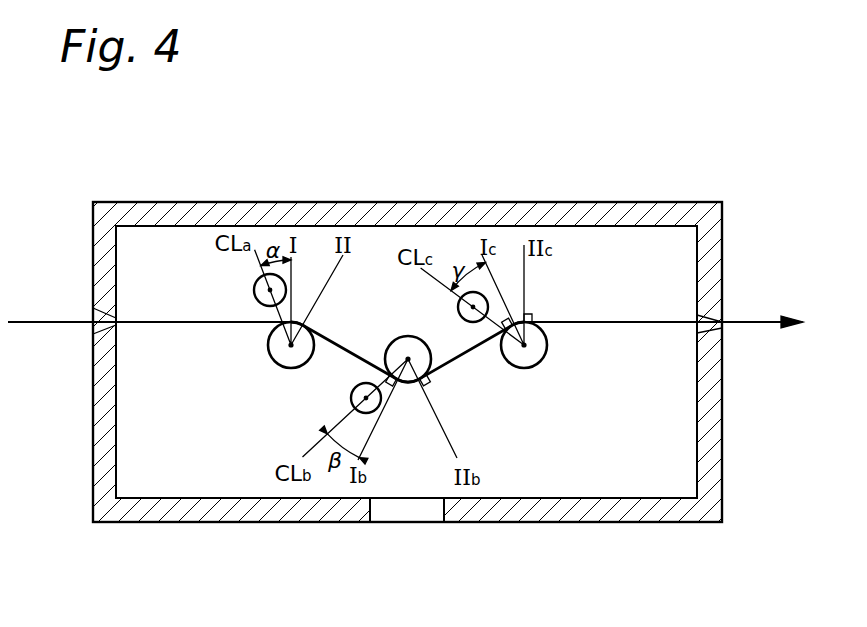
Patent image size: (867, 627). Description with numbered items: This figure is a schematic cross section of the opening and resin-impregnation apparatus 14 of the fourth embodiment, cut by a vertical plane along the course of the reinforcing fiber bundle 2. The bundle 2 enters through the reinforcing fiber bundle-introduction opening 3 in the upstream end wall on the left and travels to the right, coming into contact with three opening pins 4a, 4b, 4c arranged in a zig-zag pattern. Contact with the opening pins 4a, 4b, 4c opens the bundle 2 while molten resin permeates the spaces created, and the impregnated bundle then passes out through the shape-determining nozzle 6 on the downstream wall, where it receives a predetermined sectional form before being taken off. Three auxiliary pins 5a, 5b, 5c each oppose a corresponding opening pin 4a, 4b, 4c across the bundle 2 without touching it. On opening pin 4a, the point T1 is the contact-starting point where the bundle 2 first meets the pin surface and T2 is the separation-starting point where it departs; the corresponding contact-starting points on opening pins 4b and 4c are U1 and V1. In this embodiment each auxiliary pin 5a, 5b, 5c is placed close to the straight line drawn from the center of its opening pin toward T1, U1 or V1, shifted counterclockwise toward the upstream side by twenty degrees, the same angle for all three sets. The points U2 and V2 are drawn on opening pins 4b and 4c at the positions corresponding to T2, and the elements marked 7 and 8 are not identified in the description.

The reinforcing fiber bundle 2 is at (33, 320).
The reinforcing fiber bundle-introduction opening 3 is at (89, 325).
The opening pin 4a is at (270, 352).
The opening pin 4b is at (407, 338).
The opening pin 4c is at (546, 353).
The auxiliary pin 5a is at (254, 290).
The auxiliary pin 5b is at (351, 397).
The auxiliary pin 5c is at (458, 309).
The shape-determining nozzle 6 is at (724, 330).
The optical fiber (exiting) 7 is at (747, 322).
The bottom opening 8 is at (403, 510).
The opening and resin-impregnation apparatus 14 is at (408, 202).
The contact-starting point T1 is at (292, 320).
The separation-starting point T2 is at (308, 326).
The contact-starting point U1 is at (398, 387).
The contact point U2 is at (431, 386).
The contact-starting point V1 is at (505, 320).
The contact point V2 is at (536, 318).